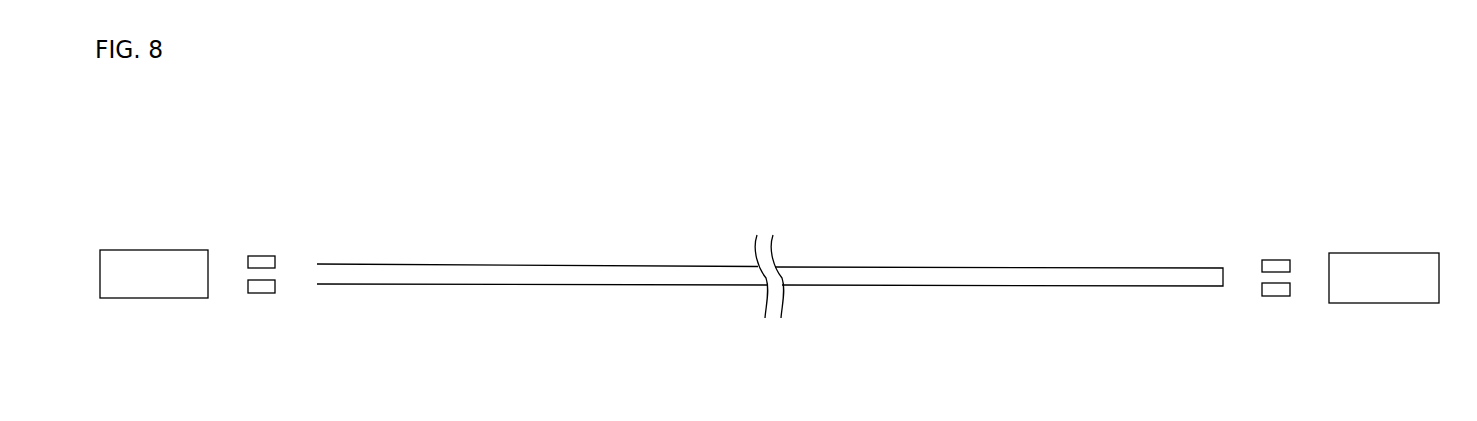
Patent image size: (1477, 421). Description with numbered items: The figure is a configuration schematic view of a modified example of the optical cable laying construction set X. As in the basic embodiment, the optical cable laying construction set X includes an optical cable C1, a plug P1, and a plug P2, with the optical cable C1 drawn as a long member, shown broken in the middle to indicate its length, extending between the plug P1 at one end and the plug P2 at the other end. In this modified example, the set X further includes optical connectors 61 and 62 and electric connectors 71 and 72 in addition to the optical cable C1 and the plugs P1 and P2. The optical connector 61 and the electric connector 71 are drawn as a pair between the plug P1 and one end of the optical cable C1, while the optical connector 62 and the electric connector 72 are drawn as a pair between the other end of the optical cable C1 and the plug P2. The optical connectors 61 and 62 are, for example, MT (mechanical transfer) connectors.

The optical cable laying construction set X is at (337, 225).
The plug P1 is at (157, 298).
The plug P2 is at (1382, 303).
The optical connector 61 is at (262, 255).
The electric connector 71 is at (262, 293).
The optical connector 62 is at (1278, 260).
The electric connector 72 is at (1277, 296).
The optical cable C1 is at (503, 284).